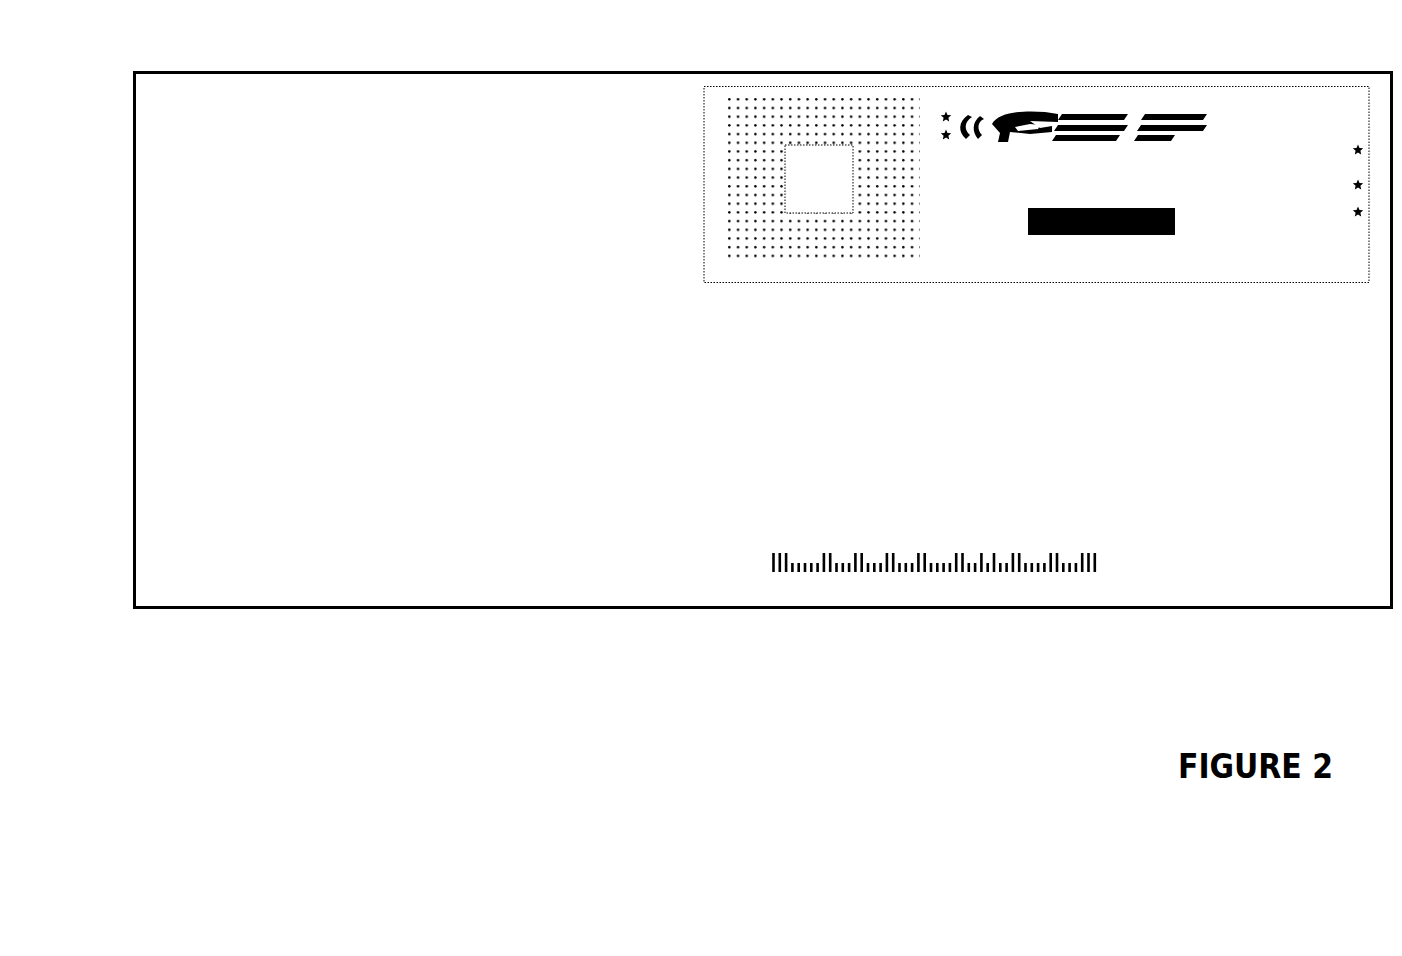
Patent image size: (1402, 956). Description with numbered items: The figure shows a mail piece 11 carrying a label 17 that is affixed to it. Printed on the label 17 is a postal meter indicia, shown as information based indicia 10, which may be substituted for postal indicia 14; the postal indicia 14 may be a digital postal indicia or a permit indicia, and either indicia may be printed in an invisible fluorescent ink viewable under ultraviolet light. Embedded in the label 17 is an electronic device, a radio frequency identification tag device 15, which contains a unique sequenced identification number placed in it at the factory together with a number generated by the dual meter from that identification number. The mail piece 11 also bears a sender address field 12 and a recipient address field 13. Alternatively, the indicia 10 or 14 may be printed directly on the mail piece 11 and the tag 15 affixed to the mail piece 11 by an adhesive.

The information based indicia 10 is at (1150, 136).
The mail piece 11 is at (285, 73).
The sender address field 12 is at (178, 99).
The recipient address field 13 is at (730, 417).
The postal indicia 14 is at (1220, 120).
The radio frequency identification tag device 15 is at (830, 108).
The label 17 is at (704, 99).